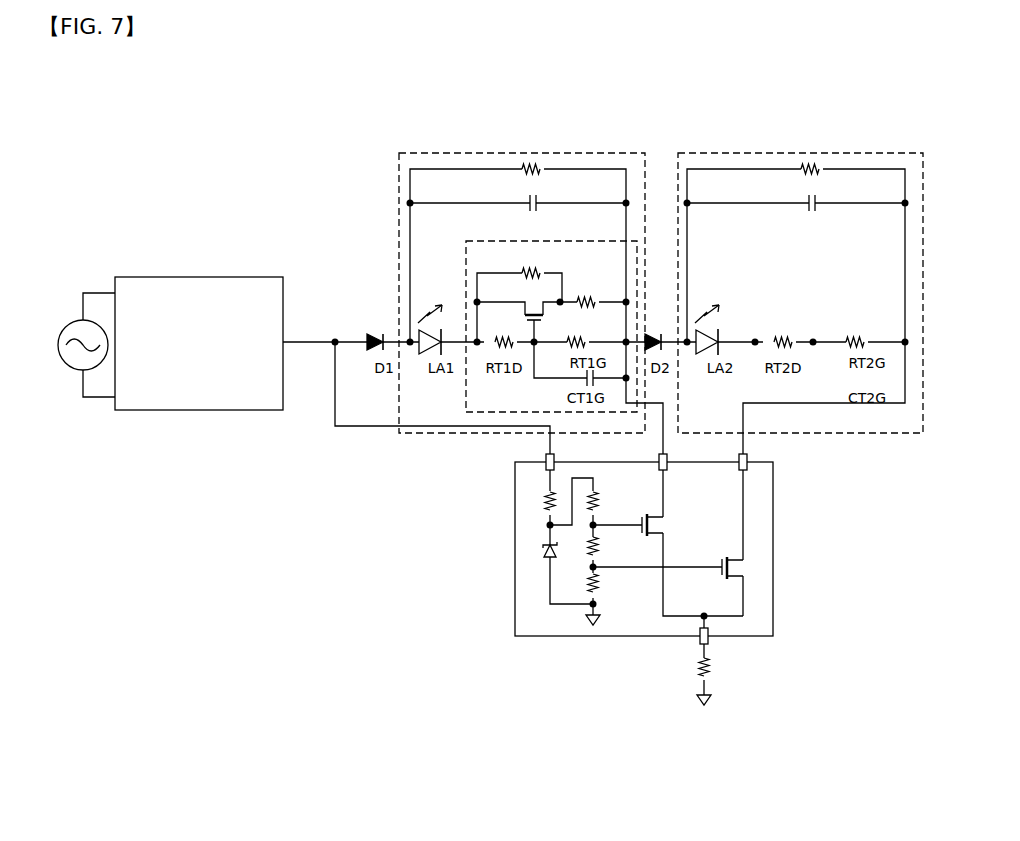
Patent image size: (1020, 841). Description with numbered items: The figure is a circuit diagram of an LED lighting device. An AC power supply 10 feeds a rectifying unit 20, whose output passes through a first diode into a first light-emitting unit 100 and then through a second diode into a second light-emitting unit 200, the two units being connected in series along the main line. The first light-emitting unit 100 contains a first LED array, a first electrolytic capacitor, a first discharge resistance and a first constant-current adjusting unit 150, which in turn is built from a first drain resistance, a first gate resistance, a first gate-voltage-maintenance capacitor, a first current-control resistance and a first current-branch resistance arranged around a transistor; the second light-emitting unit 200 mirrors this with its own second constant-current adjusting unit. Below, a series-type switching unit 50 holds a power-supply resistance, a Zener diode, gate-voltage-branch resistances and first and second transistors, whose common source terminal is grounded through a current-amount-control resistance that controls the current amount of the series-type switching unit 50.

The AC power supply 10 is at (67, 325).
The rectifying unit 20 is at (200, 277).
The series-type switching unit 50 is at (773, 508).
The first light-emitting unit 100 is at (530, 153).
The first constant-current adjusting unit 150 is at (485, 241).
The second light-emitting unit 200 is at (800, 272).